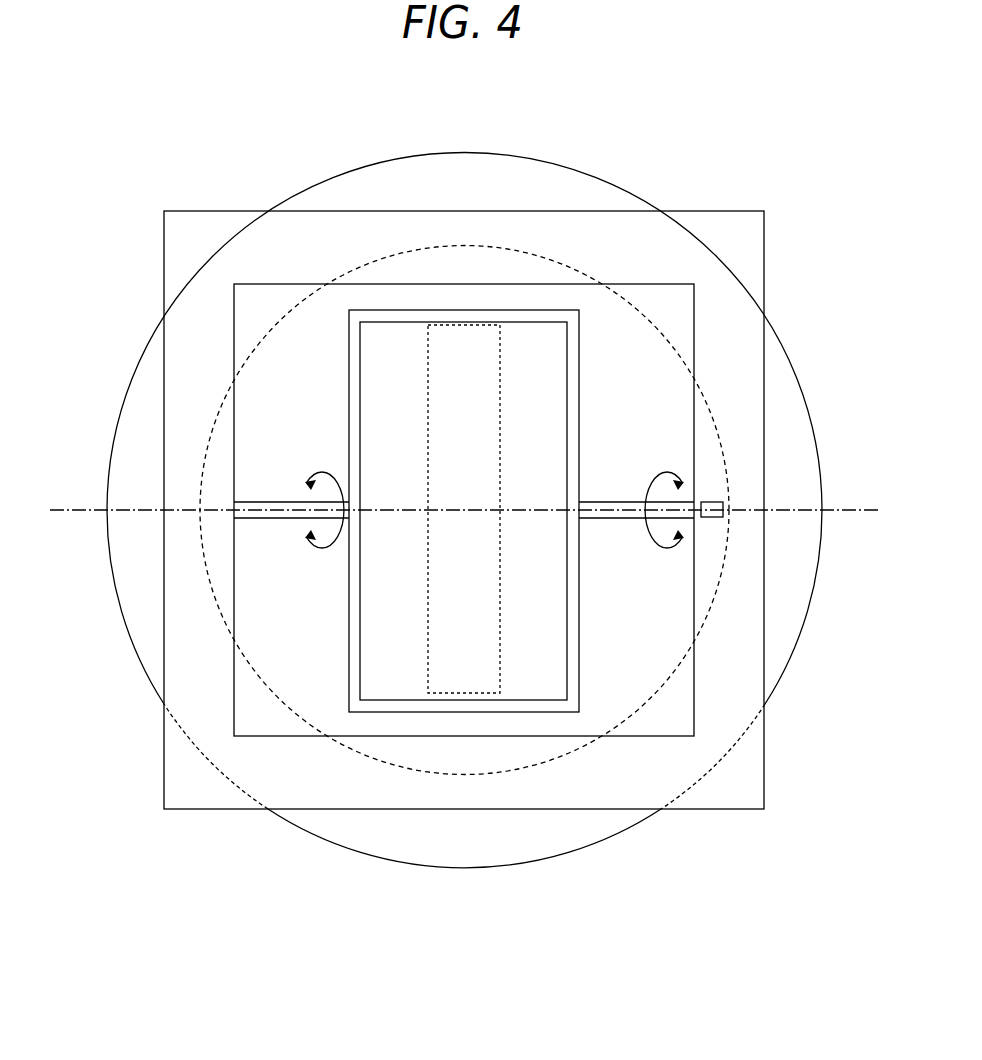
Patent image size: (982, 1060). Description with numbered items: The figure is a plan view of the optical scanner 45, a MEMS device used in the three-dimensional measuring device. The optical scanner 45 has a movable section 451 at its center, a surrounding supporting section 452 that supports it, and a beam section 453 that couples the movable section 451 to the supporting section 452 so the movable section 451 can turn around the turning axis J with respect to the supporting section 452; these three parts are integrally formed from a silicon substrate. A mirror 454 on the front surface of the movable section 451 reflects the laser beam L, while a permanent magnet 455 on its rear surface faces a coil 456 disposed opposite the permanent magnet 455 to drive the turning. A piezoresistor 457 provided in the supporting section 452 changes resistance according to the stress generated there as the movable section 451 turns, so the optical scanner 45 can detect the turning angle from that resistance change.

The optical scanner 45 is at (726, 133).
The movable section 451 is at (386, 310).
The supporting section 452 is at (637, 770).
The beam section 453 is at (628, 502).
The mirror 454 is at (548, 668).
The permanent magnet 455 is at (500, 387).
The coil 456 is at (122, 450).
The piezoresistor 457 is at (712, 518).